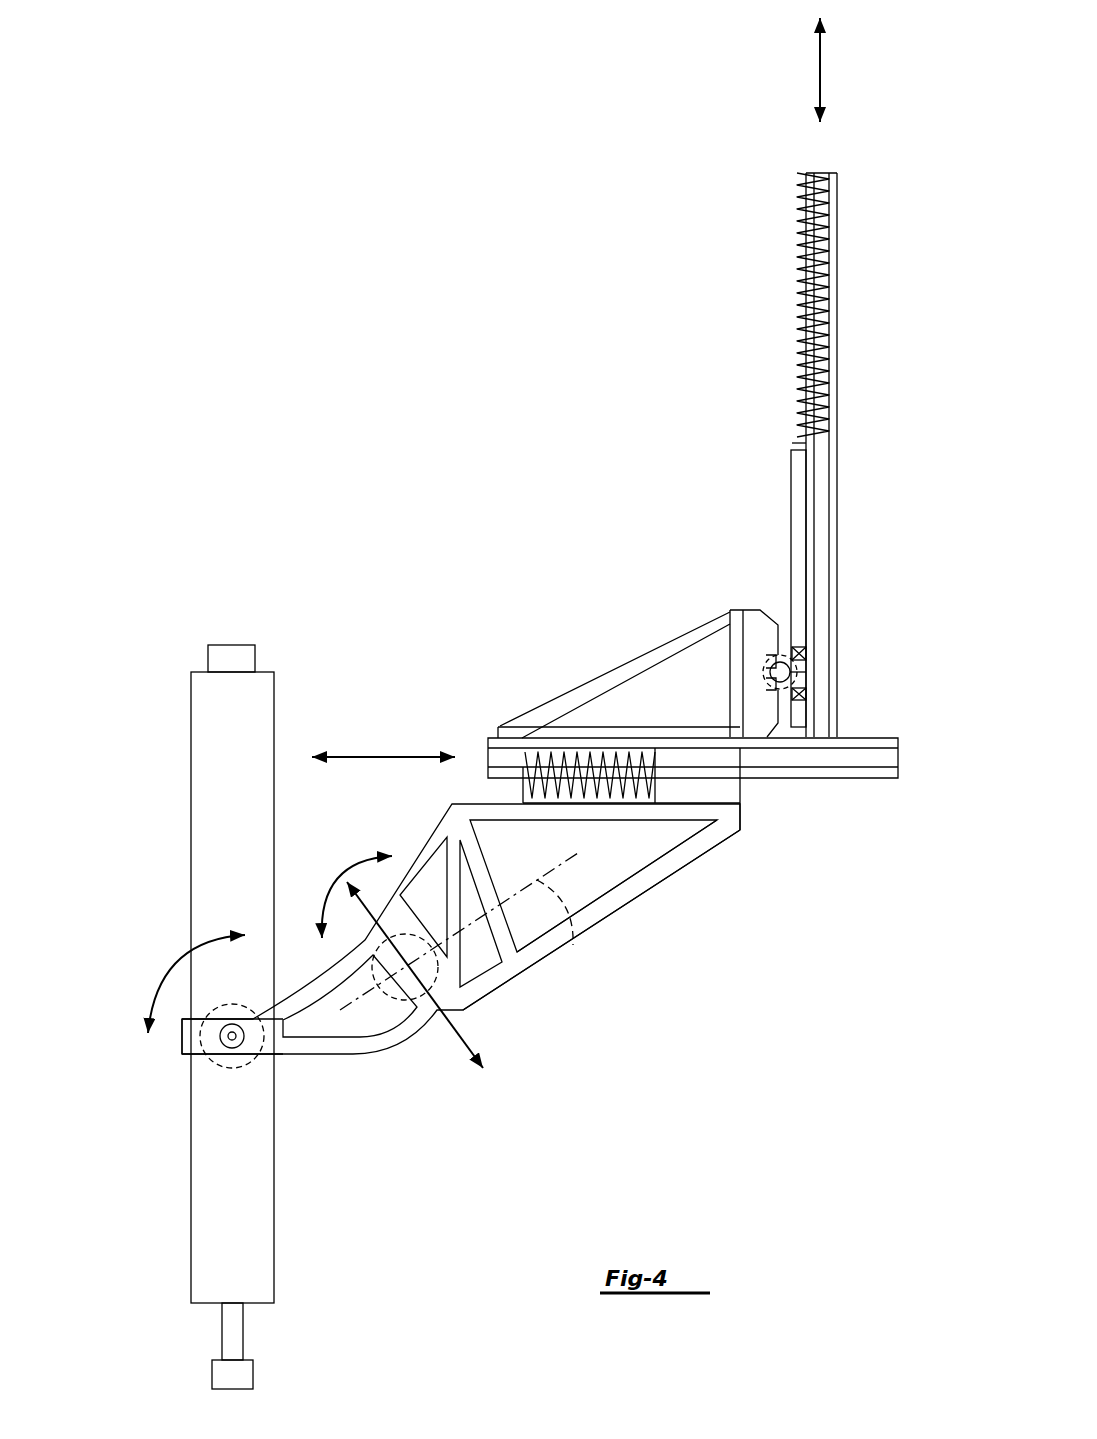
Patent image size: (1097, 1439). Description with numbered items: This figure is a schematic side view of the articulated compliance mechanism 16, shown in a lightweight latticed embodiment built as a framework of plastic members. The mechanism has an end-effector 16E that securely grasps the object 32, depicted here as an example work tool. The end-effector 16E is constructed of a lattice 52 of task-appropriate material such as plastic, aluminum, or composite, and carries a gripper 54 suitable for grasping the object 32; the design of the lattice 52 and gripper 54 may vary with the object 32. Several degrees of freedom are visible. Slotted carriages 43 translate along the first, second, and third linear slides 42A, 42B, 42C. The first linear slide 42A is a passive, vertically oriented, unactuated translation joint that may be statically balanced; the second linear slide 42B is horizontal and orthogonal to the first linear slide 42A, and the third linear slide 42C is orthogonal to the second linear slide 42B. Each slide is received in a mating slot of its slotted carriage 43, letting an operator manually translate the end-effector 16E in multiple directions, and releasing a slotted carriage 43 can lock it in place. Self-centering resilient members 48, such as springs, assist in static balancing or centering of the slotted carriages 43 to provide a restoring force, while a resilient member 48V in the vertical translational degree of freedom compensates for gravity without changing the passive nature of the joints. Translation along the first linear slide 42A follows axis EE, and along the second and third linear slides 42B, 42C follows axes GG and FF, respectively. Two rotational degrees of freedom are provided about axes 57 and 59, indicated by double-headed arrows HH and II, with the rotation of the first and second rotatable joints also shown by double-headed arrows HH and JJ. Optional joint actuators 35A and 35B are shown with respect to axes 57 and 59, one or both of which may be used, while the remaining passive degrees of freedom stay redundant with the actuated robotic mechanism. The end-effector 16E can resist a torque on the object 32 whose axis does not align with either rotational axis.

The articulated compliance mechanism 16 is at (575, 240).
The end-effector 16E is at (543, 973).
The object 32 is at (191, 744).
The joint actuator 35A is at (232, 1072).
The joint actuator 35B is at (390, 1002).
The first linear slide 42A is at (795, 165).
The second linear slide 42B is at (768, 655).
The third linear slide 42C is at (487, 752).
The slotted carriage 43 is at (757, 727).
The self-centering resilient member 48 is at (799, 672).
The self-centering resilient member 48V is at (793, 257).
The lattice 52 is at (637, 895).
The gripper 54 is at (267, 1058).
The axis 57 is at (225, 1037).
The axis 59 is at (570, 942).
The axis EE is at (820, 73).
The axis FF is at (385, 755).
The axis GG is at (770, 672).
The double-headed arrow HH is at (178, 962).
The double-headed arrow JJ is at (345, 860).
The double-headed arrow II is at (415, 1016).